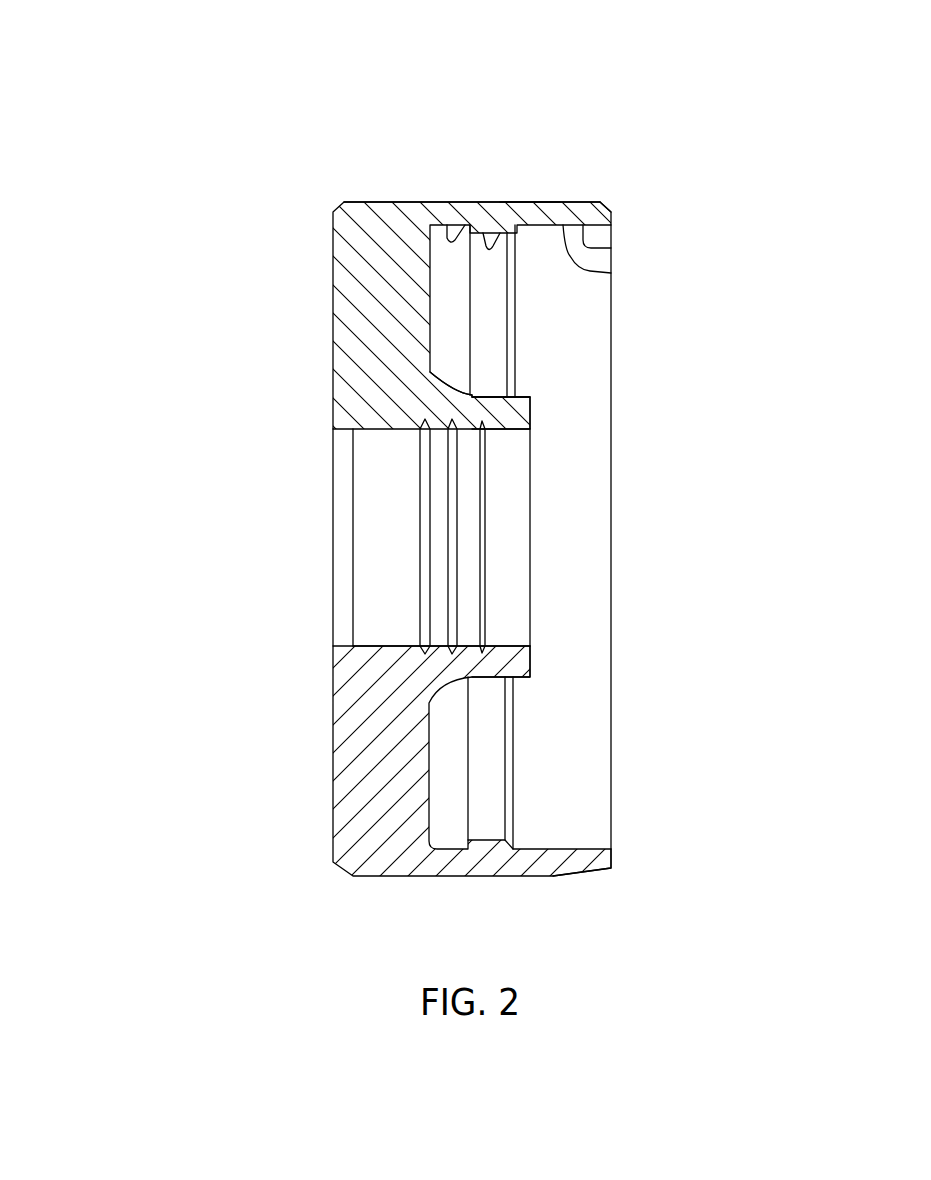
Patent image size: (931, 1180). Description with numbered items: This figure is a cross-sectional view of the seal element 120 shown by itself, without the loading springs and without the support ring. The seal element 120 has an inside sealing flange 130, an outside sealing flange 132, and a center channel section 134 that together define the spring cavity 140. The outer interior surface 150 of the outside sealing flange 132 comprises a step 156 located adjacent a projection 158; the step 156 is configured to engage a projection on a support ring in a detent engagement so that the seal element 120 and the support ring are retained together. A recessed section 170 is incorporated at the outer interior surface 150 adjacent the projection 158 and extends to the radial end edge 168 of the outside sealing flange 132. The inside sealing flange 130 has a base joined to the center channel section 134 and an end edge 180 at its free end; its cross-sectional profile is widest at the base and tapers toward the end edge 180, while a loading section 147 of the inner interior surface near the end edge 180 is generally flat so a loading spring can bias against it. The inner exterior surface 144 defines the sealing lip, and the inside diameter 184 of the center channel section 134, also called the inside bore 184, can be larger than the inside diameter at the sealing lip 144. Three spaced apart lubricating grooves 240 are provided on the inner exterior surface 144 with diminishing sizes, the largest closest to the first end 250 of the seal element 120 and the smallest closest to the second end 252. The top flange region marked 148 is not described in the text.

The seal element 120 is at (213, 313).
The center channel section 134 is at (368, 282).
The outside sealing flange 132 is at (557, 204).
The flange 148 is at (524, 203).
The radial end edge 168 is at (611, 217).
The step 156 is at (453, 242).
The projection 158 is at (490, 250).
The recessed section 170 is at (611, 247).
The outer interior surface 150 is at (611, 273).
The loading section 147 is at (528, 387).
The inside sealing flange 130 is at (513, 418).
The inside diameter 184 is at (393, 430).
The lubricating grooves 240 is at (438, 487).
The inner exterior surface 144 is at (472, 646).
The first end 250 is at (310, 848).
The end edge 180 is at (527, 663).
The spring cavity 140 is at (467, 783).
The second end 252 is at (640, 862).